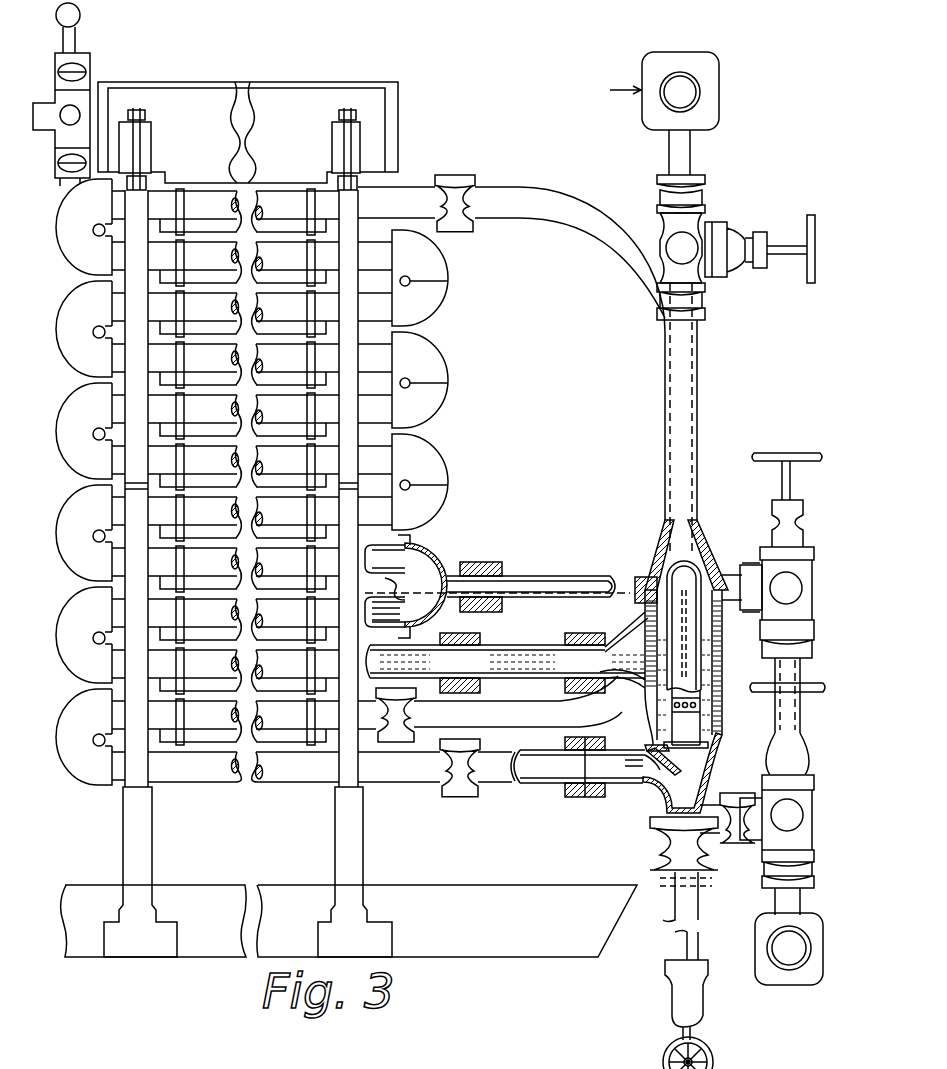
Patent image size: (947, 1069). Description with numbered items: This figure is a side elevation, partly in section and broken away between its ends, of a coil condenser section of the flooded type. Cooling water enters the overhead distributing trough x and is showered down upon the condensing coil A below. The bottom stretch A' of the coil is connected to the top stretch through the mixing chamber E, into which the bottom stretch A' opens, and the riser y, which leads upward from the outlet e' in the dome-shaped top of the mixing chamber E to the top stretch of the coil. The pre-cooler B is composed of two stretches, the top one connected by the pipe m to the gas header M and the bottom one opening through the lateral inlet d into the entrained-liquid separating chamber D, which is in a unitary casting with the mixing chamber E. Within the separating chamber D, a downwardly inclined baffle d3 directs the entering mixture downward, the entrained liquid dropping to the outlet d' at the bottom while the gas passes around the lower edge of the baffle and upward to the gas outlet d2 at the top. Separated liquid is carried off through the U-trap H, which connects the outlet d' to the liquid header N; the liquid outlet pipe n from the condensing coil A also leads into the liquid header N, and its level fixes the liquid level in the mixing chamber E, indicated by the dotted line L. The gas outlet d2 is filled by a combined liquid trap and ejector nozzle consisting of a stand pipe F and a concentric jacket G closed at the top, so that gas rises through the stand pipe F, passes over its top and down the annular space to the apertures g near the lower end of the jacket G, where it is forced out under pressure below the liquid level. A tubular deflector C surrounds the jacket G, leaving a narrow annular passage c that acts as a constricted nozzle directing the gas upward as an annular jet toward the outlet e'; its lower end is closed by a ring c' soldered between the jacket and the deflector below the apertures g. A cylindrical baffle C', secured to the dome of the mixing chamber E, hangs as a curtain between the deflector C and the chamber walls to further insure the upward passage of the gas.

The overhead distributing trough x is at (225, 80).
The condensing coil A is at (263, 482).
The bottom stretch of the condensing coil A' is at (349, 532).
The riser y is at (593, 223).
The gas header M is at (701, 97).
The pipe m is at (688, 152).
The liquid level line L is at (468, 575).
The liquid outlet pipe n is at (573, 585).
The outlet in the dome-shaped top of the mixing chamber e' is at (670, 555).
The mixing chamber E is at (635, 621).
The deflector C is at (706, 626).
The cylindrical baffle C' is at (714, 628).
The stand pipe F is at (690, 668).
The jacket G is at (703, 642).
The apertures g is at (708, 705).
The entrained-liquid separating chamber D is at (708, 775).
The gas outlet d2 is at (712, 753).
The pre-cooler B is at (420, 775).
The annular passage c is at (505, 679).
The ring c' is at (630, 780).
The lateral inlet d is at (578, 785).
The baffle or deflector d3 is at (635, 780).
The outlet for the entrained liquid d' is at (636, 798).
The liquid header N is at (768, 940).
The U-trap H is at (672, 998).